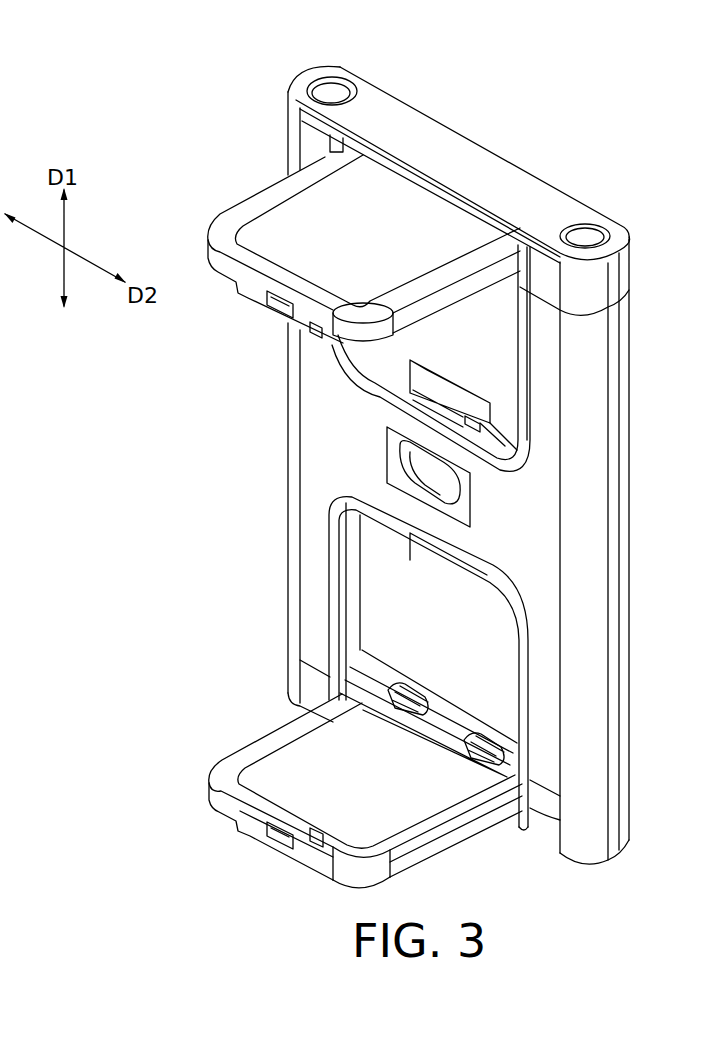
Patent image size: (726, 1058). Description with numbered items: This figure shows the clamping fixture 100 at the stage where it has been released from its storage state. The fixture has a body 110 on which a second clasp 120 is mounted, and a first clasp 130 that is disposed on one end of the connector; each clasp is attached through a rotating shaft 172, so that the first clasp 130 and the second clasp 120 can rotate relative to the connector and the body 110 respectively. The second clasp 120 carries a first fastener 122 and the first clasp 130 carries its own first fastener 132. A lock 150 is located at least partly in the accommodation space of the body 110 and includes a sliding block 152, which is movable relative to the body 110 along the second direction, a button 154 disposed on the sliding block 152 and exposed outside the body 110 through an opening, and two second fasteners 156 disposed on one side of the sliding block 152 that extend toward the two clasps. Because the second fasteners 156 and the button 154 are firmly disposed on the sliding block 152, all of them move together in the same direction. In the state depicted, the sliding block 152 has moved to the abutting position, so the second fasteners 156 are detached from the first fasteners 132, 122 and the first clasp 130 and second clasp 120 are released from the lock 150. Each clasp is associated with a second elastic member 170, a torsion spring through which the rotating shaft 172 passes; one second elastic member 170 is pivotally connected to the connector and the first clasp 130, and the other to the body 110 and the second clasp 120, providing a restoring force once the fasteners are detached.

The clamping fixture 100 is at (243, 106).
The body 110 is at (588, 578).
The second clasp 120 is at (270, 200).
The first fastener 122 is at (272, 316).
The first clasp 130 is at (264, 764).
The first fastener 132 is at (262, 848).
The lock 150 is at (372, 456).
The sliding block 152 is at (405, 476).
The button 154 is at (440, 423).
The second fastener 156 is at (520, 428).
The second elastic member 170 is at (482, 765).
The rotating shaft 172 is at (468, 745).